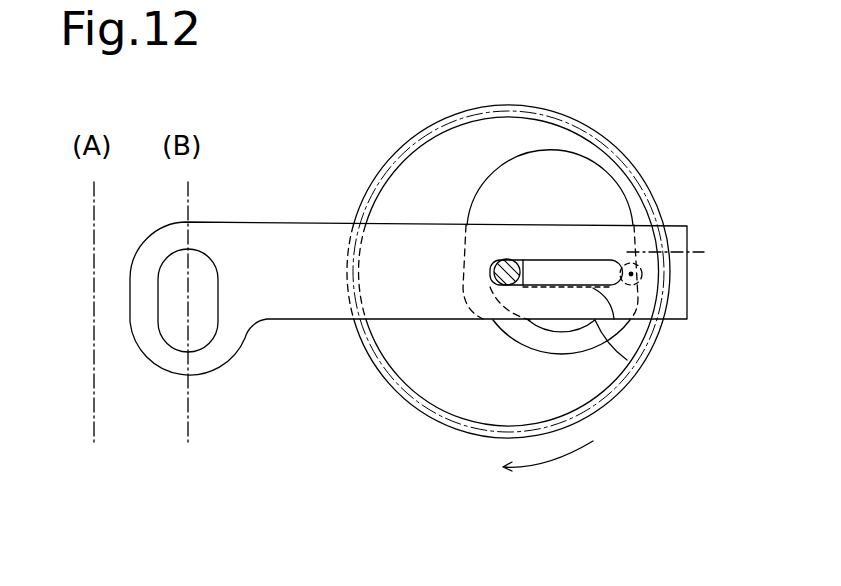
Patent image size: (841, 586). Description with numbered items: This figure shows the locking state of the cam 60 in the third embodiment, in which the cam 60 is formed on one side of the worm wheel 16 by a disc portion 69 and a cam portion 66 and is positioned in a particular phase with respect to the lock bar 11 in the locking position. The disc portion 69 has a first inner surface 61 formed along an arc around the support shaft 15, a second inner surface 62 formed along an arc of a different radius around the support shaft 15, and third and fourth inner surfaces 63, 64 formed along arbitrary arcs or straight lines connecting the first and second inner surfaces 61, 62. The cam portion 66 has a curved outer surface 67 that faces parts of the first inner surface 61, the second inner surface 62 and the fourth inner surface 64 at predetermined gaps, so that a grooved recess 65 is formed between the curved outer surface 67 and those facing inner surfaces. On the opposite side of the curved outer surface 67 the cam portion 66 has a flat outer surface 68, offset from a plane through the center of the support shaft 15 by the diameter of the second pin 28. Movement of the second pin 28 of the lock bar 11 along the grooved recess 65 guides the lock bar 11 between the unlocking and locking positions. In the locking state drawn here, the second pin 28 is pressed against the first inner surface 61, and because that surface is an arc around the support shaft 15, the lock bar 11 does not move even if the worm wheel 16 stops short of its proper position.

The lock bar 11 is at (265, 223).
The support shaft 15 is at (507, 258).
The worm wheel 16 is at (383, 168).
The second pin 28 is at (686, 245).
The cam 60 is at (586, 180).
The first inner surface 61 is at (620, 203).
The second inner surface 62 is at (478, 289).
The third inner surface 63 is at (472, 208).
The fourth inner surface 64 is at (538, 343).
The grooved recess 65 is at (510, 330).
The cam portion 66 is at (567, 330).
The curved outer surface 67 is at (627, 360).
The flat outer surface 68 is at (655, 321).
The disc portion 69 is at (392, 345).